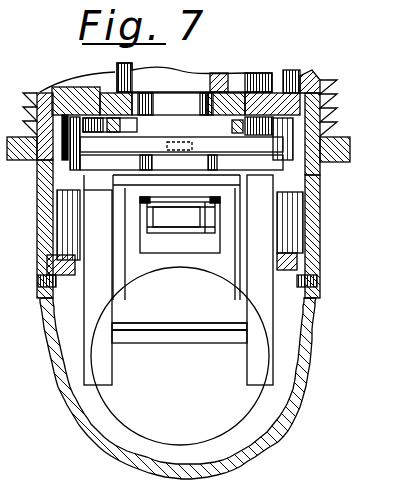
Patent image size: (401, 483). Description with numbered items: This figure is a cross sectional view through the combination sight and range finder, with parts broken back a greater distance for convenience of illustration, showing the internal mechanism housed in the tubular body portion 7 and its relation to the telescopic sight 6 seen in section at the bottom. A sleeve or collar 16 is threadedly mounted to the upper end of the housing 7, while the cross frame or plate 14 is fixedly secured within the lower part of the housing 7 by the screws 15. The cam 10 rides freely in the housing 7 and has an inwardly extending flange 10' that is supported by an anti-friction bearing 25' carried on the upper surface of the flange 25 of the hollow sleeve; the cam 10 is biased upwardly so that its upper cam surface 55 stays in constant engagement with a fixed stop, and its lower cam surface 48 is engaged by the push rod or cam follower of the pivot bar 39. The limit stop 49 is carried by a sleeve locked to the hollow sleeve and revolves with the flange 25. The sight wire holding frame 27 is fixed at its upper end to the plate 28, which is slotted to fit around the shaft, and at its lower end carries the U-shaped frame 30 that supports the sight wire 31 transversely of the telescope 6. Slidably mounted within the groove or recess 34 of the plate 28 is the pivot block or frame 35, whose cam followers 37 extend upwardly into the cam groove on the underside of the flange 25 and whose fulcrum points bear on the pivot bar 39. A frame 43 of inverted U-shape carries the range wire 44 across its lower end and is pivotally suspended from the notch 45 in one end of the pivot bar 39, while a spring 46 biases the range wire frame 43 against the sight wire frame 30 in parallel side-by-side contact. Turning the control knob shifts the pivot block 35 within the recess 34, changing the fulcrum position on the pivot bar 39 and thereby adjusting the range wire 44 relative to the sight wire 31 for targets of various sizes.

The telescopic sight 6 is at (306, 372).
The tubular body portion 7 is at (42, 210).
The cam 10 is at (197, 121).
The flange of the cam 10' is at (262, 80).
The cross frame or plate 14 is at (330, 248).
The screws 15 is at (316, 278).
The sleeve or collar 16 is at (330, 107).
The flange 25 is at (181, 146).
The anti-friction bearing 25' is at (325, 77).
The sight wire holding frame 27 is at (97, 250).
The plate 28 is at (136, 170).
The U-shaped frame 30 is at (165, 417).
The sight wire 31 is at (190, 345).
The groove or recess 34 is at (233, 177).
The pivot block or frame 35 is at (157, 158).
The cam followers 37 is at (180, 138).
The pivot bar 39 is at (149, 197).
The range wire frame 43 is at (122, 292).
The range wire 44 is at (173, 322).
The notch 45 is at (214, 197).
The spring 46 is at (210, 218).
The lower cam surface 48 is at (72, 190).
The limit stop 49 is at (247, 81).
The upper cam surface 55 is at (80, 82).